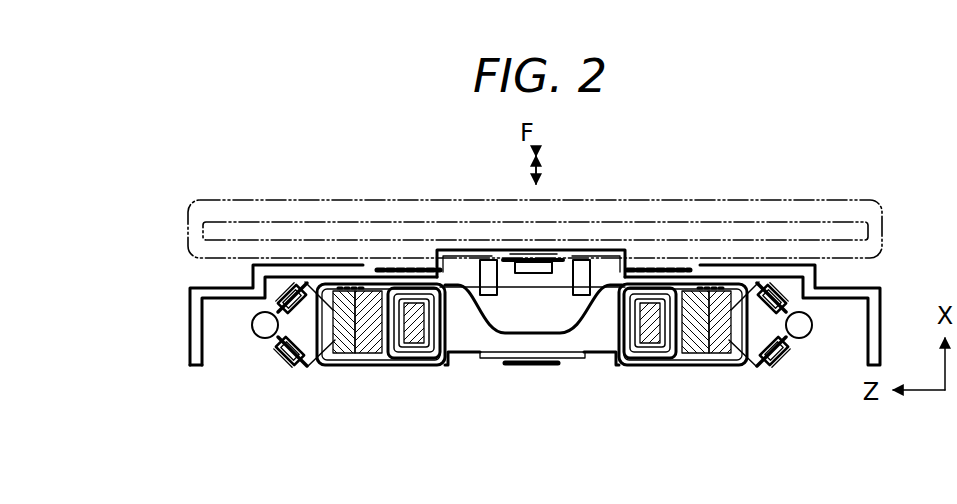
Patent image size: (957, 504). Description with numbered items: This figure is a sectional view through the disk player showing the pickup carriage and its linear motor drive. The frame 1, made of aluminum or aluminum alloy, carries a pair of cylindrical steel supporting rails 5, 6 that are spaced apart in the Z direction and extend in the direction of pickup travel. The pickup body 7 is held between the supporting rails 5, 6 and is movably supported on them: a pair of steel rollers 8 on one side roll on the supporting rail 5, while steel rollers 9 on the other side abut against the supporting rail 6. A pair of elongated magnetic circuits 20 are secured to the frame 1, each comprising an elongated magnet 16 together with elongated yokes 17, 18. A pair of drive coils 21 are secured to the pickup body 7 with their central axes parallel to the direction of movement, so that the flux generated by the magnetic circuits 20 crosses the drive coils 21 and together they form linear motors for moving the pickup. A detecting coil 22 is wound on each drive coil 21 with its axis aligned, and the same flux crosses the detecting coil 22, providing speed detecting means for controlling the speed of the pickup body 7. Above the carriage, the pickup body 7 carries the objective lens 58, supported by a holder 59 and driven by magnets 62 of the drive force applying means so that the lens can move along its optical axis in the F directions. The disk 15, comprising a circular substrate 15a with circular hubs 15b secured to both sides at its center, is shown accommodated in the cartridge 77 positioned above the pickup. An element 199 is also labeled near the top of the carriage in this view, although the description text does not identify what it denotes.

The frame 1 is at (186, 328).
The supporting rail 5 is at (262, 337).
The supporting rail 6 is at (800, 340).
The pickup body 7 is at (553, 368).
The rollers 8 is at (300, 290).
The rollers 9 is at (768, 287).
The disk 15 is at (823, 212).
The circular substrate 15a is at (853, 225).
The circular hubs 15b is at (548, 232).
The magnet 16 is at (372, 350).
The yoke 17 is at (345, 350).
The yoke 18 is at (410, 350).
The magnetic circuit 20 is at (322, 362).
The drive coil 21 is at (437, 362).
The detecting coil 22 is at (445, 330).
The objective lens 58 is at (583, 258).
The holder 59 is at (510, 254).
The magnets 62 is at (483, 258).
The cartridge 77 is at (186, 227).
The rail 199 is at (687, 262).